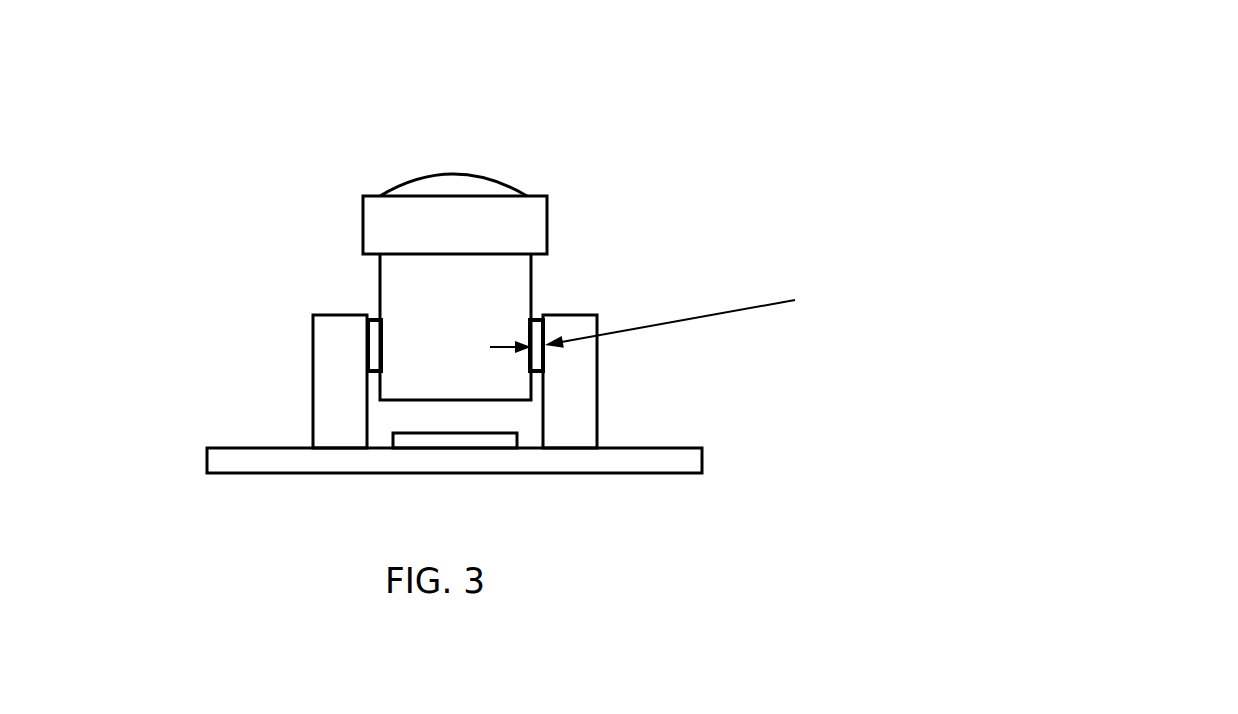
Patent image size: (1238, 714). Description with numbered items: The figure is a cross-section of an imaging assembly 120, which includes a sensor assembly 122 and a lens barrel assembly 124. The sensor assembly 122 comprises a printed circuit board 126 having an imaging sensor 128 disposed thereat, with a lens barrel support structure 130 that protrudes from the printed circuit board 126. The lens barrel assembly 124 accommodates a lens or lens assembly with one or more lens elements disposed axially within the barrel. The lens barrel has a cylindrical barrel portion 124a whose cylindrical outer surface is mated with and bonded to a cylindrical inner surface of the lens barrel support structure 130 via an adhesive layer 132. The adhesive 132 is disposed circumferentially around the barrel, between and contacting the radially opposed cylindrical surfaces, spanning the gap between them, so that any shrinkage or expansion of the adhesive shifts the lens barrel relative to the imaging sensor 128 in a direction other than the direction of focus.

The imaging assembly 120 is at (603, 155).
The lens barrel assembly 124 is at (555, 224).
The cylindrical barrel portion 124a is at (388, 288).
The adhesive layer 132 is at (547, 330).
The sensor assembly 122 is at (1067, 558).
The lens barrel support structure 130 is at (567, 382).
The printed circuit board 126 is at (703, 457).
The imaging sensor 128 is at (478, 443).